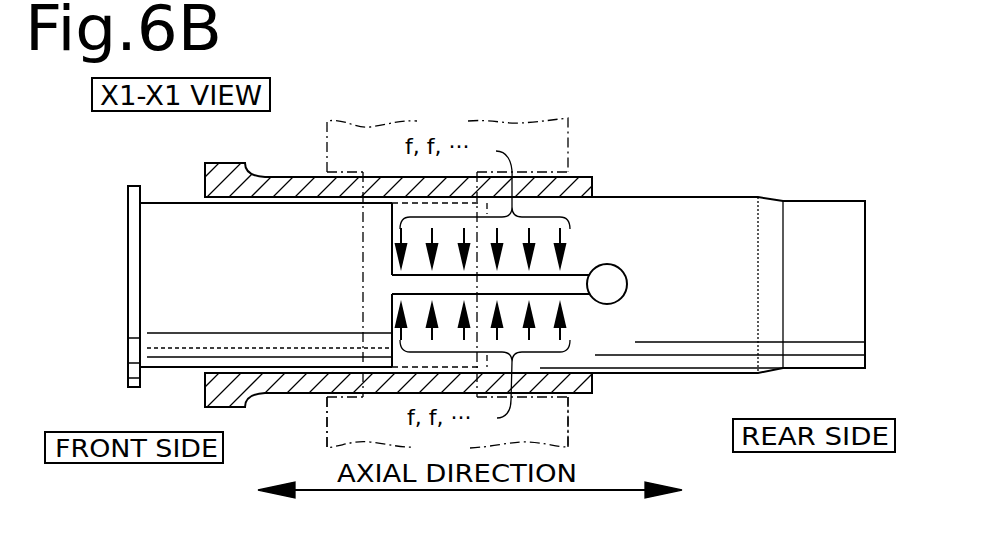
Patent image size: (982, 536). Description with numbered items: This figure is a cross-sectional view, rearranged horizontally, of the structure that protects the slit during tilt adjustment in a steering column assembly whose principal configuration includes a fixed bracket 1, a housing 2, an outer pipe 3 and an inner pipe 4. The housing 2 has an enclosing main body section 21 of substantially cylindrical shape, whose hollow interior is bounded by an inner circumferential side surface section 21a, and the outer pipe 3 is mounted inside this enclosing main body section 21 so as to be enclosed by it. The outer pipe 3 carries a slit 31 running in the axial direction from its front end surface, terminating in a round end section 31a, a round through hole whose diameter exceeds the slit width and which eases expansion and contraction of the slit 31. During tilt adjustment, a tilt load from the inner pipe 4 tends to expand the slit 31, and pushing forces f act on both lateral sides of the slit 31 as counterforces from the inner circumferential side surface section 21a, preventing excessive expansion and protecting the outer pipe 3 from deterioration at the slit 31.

The fixed bracket 1 is at (588, 423).
The housing 2 is at (582, 166).
The outer pipe 3 is at (660, 186).
The inner pipe 4 is at (178, 203).
The enclosing main body section 21 is at (532, 177).
The inner circumferential side surface section 21a is at (572, 198).
The slit 31 is at (440, 291).
The round end section 31a is at (610, 280).